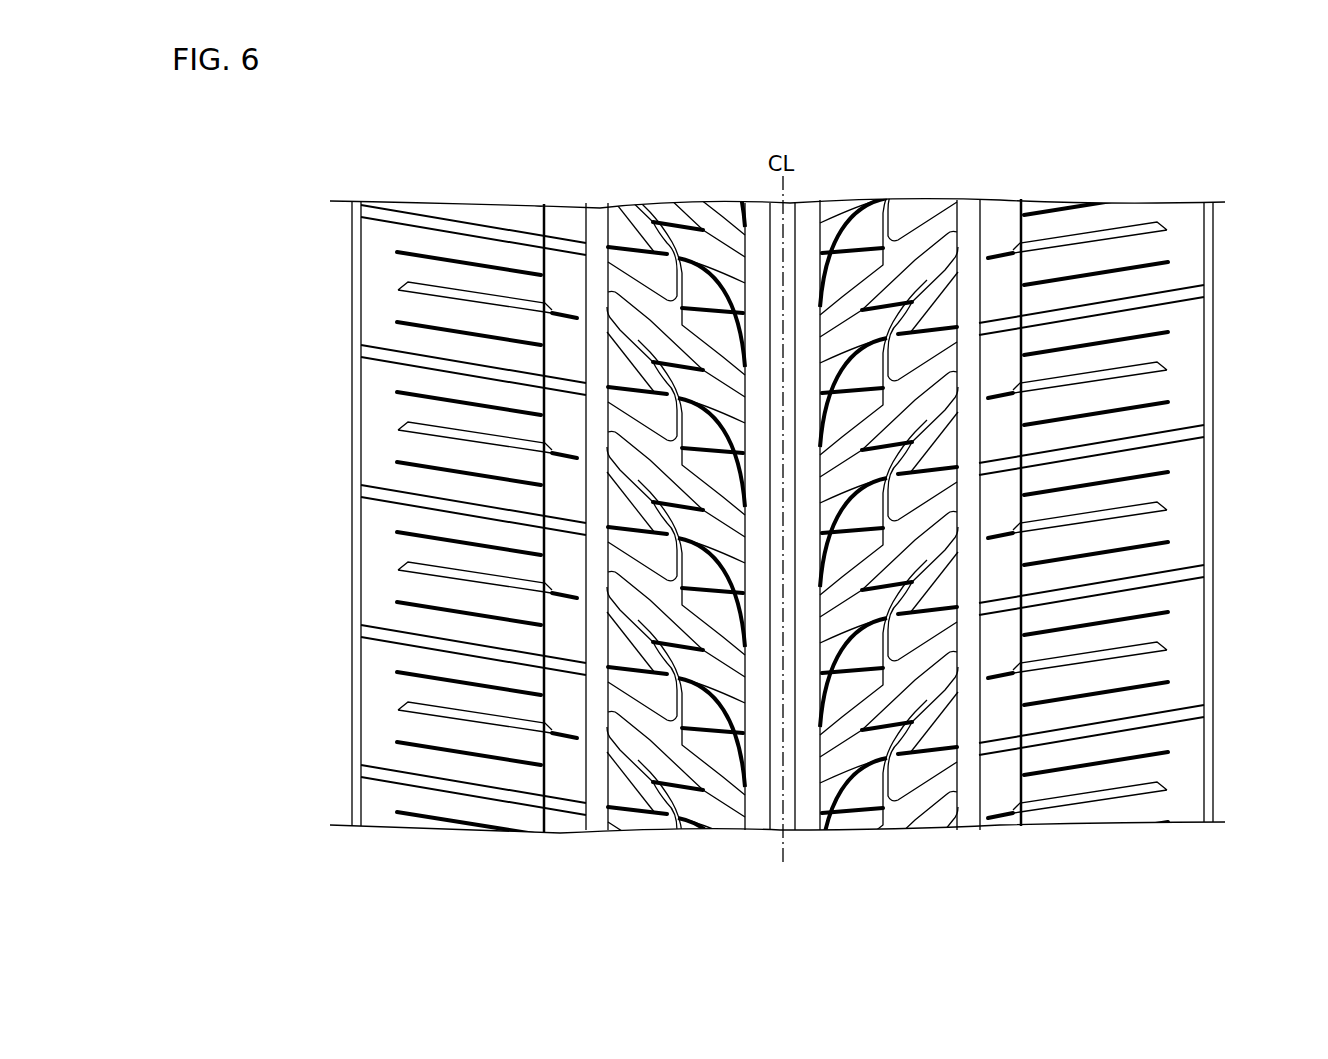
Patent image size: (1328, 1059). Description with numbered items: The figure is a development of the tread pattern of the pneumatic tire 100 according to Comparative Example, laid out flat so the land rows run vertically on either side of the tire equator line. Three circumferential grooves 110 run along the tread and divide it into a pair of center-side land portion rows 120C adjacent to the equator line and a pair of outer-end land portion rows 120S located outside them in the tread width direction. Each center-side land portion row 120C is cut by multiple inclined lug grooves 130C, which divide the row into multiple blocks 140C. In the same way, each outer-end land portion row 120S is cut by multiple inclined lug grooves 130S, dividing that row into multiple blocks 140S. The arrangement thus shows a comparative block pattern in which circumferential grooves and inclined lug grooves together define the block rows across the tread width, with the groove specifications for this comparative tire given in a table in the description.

The pneumatic tire 100 is at (978, 56).
The circumferential grooves 110 is at (592, 217).
The outer-end land portion row 120S is at (363, 127).
The center-side land portion row 120C is at (743, 127).
The inclined lug grooves 130S is at (365, 488).
The blocks 140S is at (369, 387).
The inclined lug grooves 130C is at (730, 780).
The blocks 140C is at (640, 841).